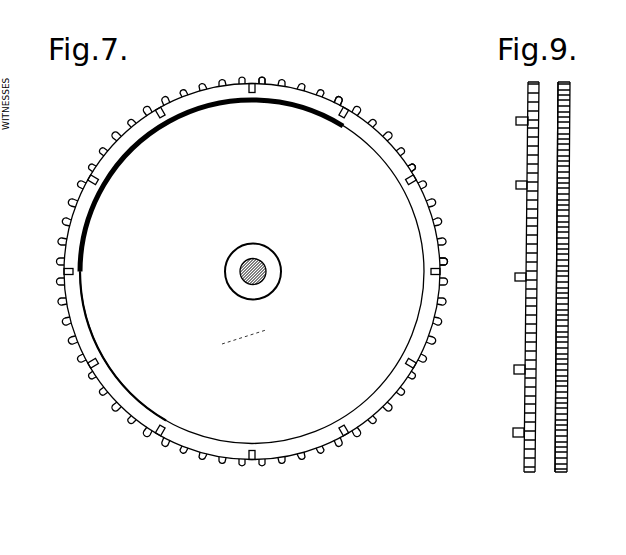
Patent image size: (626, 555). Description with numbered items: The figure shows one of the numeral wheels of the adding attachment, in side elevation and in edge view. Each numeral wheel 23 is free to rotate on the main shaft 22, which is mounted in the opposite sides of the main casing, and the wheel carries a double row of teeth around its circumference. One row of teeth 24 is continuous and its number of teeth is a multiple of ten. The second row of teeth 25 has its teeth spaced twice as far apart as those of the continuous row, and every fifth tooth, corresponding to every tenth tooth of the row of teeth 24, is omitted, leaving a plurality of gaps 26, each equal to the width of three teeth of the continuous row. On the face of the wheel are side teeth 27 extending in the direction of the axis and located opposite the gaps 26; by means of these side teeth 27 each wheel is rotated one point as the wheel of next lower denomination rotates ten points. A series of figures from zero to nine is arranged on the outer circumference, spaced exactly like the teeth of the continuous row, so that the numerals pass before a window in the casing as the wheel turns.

In FIG. 7, the main shaft 22 is at (240, 271).
In FIG. 7, the numeral wheel 23 is at (187, 405).
In FIG. 9, the numeral wheel 23 is at (568, 366).
In FIG. 9, the continuous row of teeth 24 is at (571, 100).
In FIG. 7, the second row of teeth 25 is at (395, 403).
In FIG. 9, the second row of teeth 25 is at (528, 92).
In FIG. 7, the gaps 26 is at (258, 86).
In FIG. 7, the side teeth 27 is at (256, 98).
In FIG. 9, the side teeth 27 is at (516, 185).